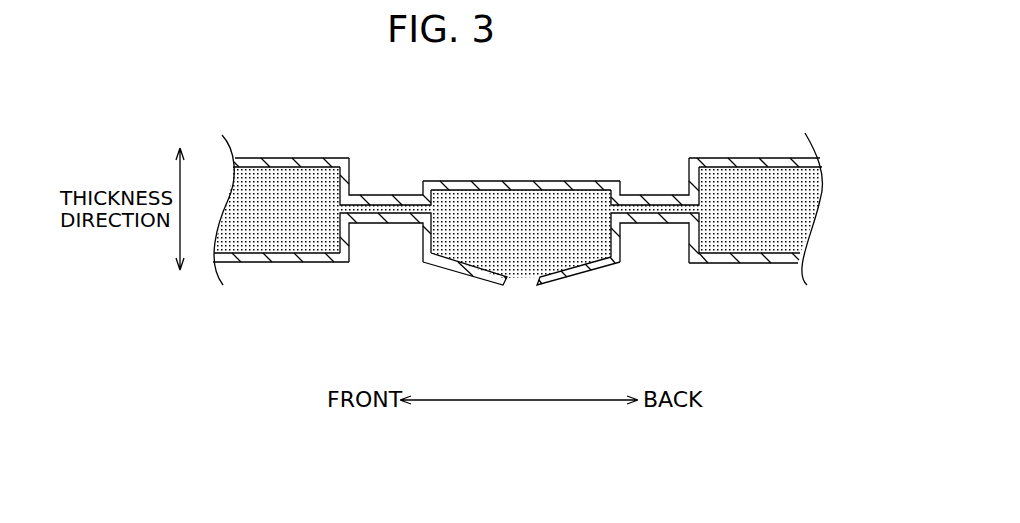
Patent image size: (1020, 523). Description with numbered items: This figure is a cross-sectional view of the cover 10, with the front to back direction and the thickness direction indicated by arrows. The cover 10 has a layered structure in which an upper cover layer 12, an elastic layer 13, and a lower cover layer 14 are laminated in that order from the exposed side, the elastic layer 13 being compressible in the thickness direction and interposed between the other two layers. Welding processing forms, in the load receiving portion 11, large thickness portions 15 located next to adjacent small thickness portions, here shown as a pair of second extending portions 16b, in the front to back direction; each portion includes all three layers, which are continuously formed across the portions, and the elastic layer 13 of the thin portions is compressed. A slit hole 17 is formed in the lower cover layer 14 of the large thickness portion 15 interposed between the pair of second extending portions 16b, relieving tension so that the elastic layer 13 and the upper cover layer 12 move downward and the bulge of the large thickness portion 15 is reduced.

The cover 10 is at (236, 360).
The load receiving portion 11 is at (266, 282).
The upper cover layer 12 is at (318, 158).
The elastic layer 13 is at (561, 262).
The lower cover layer 14 is at (660, 224).
The large thickness portion 15 is at (288, 142).
The second extending portion 16b is at (386, 180).
The slit hole 17 is at (519, 284).